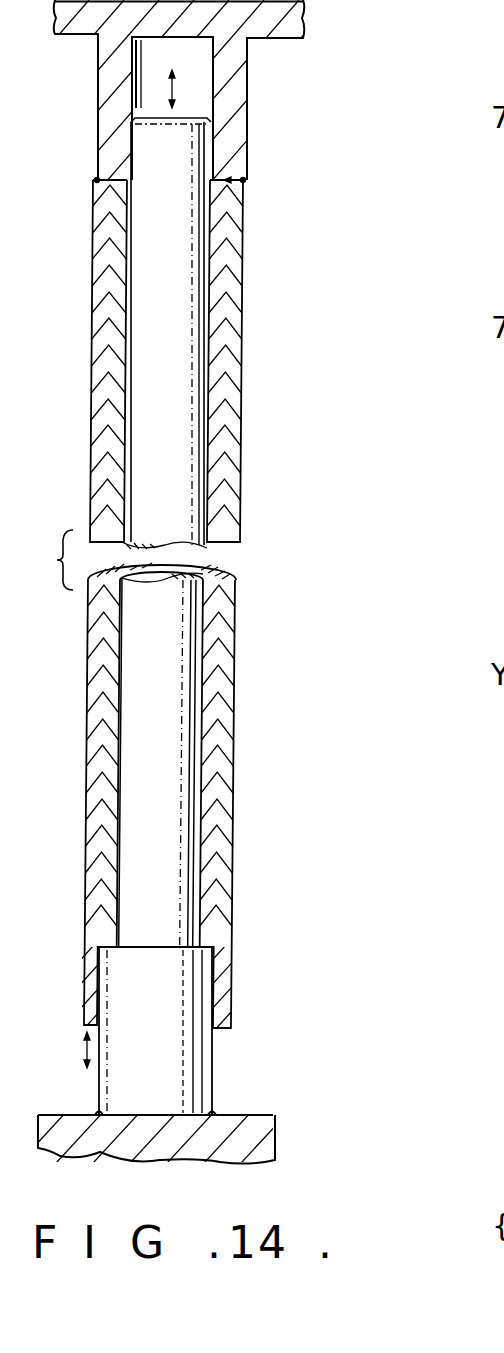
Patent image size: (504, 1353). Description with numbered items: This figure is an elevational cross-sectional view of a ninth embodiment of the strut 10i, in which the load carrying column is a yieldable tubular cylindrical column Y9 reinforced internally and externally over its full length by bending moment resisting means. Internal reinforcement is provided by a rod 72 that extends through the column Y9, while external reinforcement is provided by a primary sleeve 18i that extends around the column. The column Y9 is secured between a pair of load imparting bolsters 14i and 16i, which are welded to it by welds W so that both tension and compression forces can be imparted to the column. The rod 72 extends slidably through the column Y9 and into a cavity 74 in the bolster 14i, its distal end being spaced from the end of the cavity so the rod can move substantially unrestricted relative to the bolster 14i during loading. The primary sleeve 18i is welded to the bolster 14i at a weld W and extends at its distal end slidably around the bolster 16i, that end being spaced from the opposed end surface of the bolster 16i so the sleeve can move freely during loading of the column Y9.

The strut 10i is at (202, 587).
The load imparting bolster 14i is at (246, 74).
The load imparting bolster 16i is at (203, 1068).
The primary sleeve 18i is at (232, 332).
The rod 72 is at (196, 287).
The cavity 74 is at (133, 78).
The weld W is at (97, 180).
The yieldable column Y9 is at (108, 840).